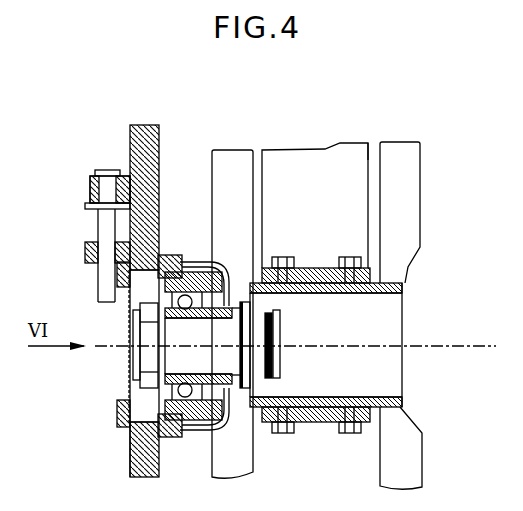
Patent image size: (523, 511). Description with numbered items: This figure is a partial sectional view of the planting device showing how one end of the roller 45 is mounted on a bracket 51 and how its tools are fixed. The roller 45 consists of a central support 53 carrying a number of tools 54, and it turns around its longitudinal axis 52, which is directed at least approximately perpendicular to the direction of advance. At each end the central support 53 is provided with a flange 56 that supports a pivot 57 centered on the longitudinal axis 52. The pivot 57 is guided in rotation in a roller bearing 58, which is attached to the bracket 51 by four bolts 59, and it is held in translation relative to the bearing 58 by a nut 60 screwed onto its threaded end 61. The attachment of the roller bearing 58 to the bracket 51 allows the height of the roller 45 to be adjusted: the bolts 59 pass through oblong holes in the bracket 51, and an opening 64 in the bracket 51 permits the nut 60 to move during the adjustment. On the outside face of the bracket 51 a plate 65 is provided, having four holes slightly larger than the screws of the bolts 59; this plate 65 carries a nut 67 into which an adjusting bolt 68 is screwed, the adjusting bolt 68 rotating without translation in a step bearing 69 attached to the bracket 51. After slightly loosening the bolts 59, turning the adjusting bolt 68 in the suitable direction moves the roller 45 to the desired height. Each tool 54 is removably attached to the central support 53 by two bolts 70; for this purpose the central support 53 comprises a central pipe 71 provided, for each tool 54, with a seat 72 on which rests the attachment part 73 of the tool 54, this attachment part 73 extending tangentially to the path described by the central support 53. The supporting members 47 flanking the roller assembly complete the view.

The roller 45 is at (338, 140).
The support member 47 is at (233, 150).
The bracket 51 is at (158, 165).
The longitudinal axis 52 is at (428, 347).
The central support 53 is at (370, 297).
The tool 54 is at (310, 150).
The flange 56 is at (258, 395).
The pivot 57 is at (275, 318).
The roller bearing 58 is at (172, 258).
The bolt 59 is at (117, 275).
The nut 60 is at (133, 313).
The threaded end 61 is at (130, 358).
The opening 64 is at (160, 445).
The plate 65 is at (130, 447).
The nut 67 is at (85, 250).
The adjusting bolt 68 is at (102, 170).
The step bearing 69 is at (90, 188).
The bolt 70 is at (280, 257).
The central pipe 71 is at (338, 399).
The seat 72 is at (333, 292).
The attachment part 73 is at (322, 268).